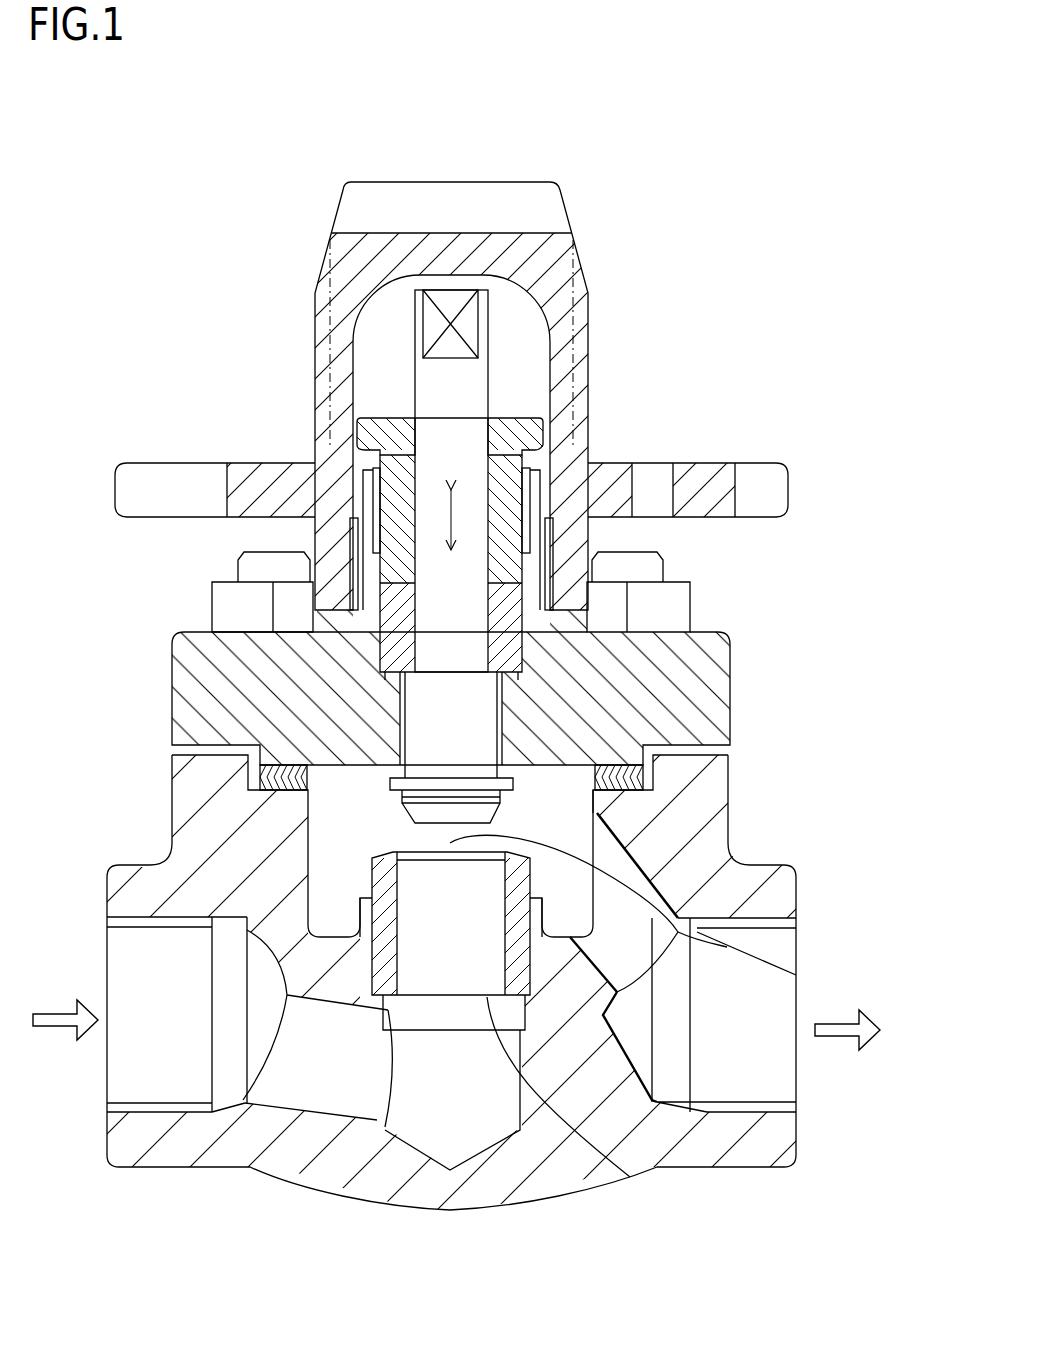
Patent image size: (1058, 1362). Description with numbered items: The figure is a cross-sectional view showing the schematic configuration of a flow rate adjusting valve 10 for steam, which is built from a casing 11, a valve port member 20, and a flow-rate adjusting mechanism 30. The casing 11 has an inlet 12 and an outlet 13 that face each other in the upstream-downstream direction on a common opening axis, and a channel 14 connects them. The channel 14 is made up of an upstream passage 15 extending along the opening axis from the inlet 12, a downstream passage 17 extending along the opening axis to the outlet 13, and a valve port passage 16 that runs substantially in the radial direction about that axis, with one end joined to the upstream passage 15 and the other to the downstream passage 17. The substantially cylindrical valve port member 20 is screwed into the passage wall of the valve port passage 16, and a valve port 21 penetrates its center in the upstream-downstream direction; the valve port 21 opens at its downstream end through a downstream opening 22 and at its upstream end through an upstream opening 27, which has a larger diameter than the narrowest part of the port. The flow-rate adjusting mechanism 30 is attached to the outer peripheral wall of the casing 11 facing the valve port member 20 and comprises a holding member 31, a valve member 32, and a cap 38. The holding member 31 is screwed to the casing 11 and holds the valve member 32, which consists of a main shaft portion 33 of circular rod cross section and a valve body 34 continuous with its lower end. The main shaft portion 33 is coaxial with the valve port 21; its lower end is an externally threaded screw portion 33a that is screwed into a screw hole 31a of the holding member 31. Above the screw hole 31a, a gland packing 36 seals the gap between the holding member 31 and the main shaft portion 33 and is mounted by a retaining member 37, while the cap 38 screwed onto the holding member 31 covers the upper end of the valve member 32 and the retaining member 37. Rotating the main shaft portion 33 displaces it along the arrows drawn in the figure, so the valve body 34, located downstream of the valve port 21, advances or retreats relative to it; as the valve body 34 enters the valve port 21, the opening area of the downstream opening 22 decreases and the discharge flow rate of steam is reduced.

The flow rate adjusting valve 10 is at (262, 157).
The casing 11 is at (197, 790).
The inlet 12 is at (136, 982).
The outlet 13 is at (775, 1075).
The channel 14 is at (555, 1047).
The upstream passage 15 is at (340, 1077).
The valve port passage 16 is at (477, 1097).
The downstream passage 17 is at (623, 873).
The valve port member 20 is at (370, 878).
The valve port 21 is at (686, 1038).
The downstream opening 22 is at (727, 947).
The upstream opening 27 is at (622, 1085).
The flow-rate adjusting mechanism 30 is at (312, 333).
The holding member 31 is at (703, 666).
The screw hole 31a is at (404, 713).
The valve member 32 is at (495, 352).
The main shaft portion 33 is at (491, 386).
The screw portion 33a is at (471, 720).
The valve body 34 is at (400, 797).
The gland packing 36 is at (400, 633).
The retaining member 37 is at (522, 437).
The cap 38 is at (347, 256).